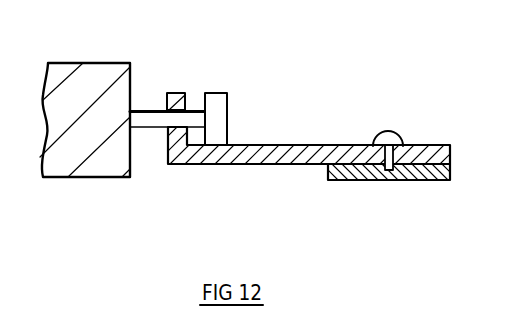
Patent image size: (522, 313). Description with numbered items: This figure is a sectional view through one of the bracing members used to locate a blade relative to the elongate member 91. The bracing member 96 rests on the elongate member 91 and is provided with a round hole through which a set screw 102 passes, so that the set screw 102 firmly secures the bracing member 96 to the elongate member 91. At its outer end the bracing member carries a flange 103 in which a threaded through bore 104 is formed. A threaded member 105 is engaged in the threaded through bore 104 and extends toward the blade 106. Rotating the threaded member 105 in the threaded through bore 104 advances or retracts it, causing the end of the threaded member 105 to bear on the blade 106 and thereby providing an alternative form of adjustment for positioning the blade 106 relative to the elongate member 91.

The elongate member 91 is at (418, 181).
The bracing member 96 is at (277, 145).
The set screw 102 is at (396, 133).
The flange 103 is at (180, 93).
The threaded through bore 104 is at (168, 134).
The threaded member 105 is at (214, 104).
The blade 106 is at (78, 150).